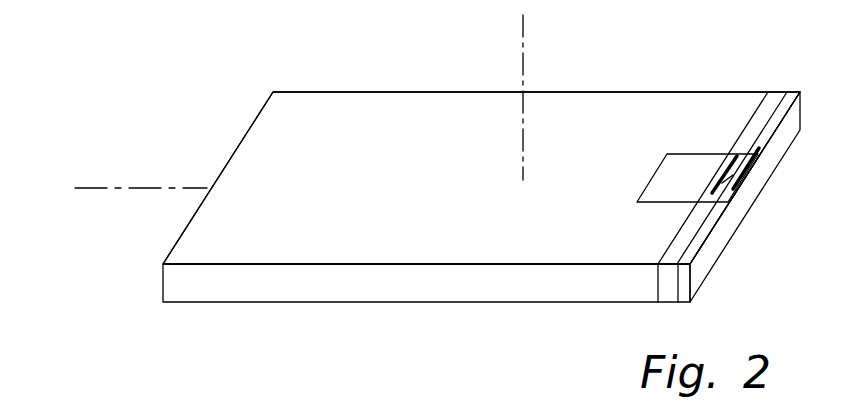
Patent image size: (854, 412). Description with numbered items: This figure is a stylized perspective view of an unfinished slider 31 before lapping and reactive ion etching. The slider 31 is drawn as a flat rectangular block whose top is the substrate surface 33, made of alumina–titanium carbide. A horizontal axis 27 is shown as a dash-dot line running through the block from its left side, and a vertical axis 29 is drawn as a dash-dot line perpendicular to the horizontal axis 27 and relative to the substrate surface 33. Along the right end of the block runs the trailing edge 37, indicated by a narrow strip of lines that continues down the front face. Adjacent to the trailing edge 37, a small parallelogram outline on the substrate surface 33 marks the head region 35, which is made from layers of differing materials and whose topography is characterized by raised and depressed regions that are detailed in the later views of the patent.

The horizontal axis 27 is at (118, 188).
The vertical axis 29 is at (523, 50).
The slider 31 is at (418, 59).
The substrate surface 33 is at (598, 105).
The head region 35 is at (705, 164).
The trailing edge 37 is at (753, 188).